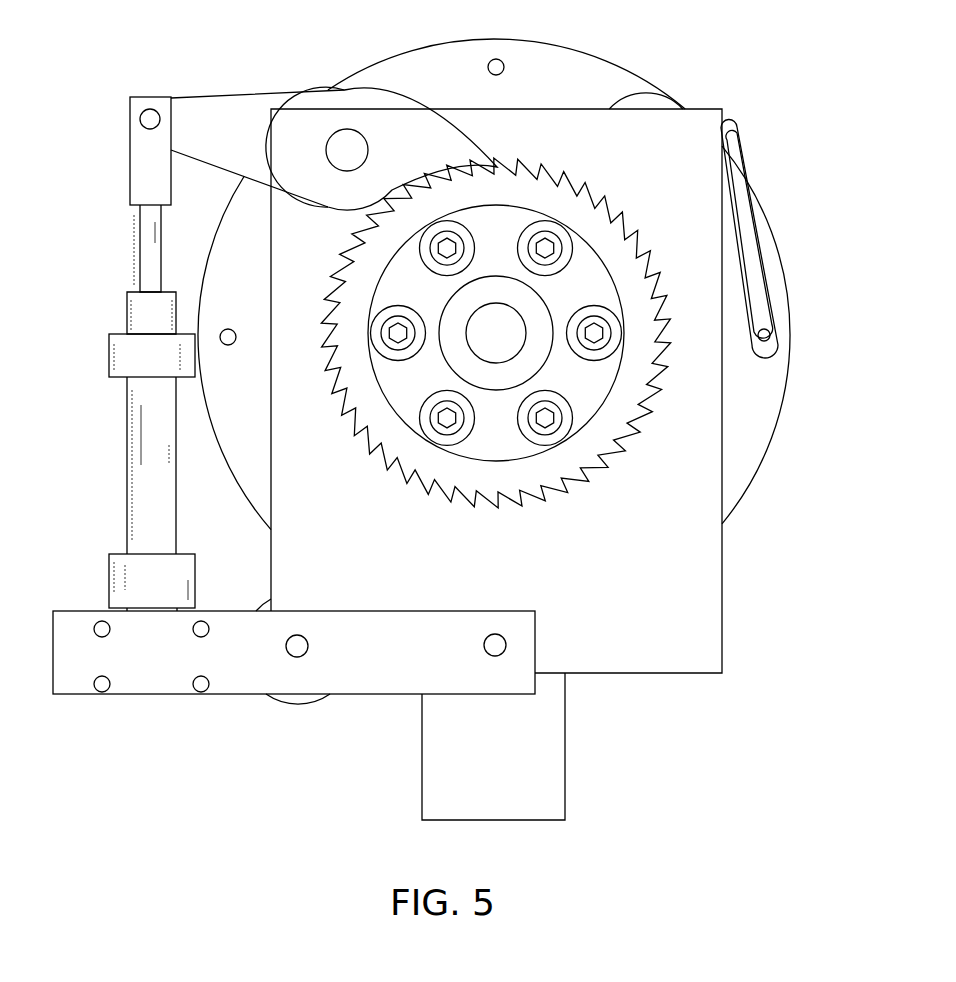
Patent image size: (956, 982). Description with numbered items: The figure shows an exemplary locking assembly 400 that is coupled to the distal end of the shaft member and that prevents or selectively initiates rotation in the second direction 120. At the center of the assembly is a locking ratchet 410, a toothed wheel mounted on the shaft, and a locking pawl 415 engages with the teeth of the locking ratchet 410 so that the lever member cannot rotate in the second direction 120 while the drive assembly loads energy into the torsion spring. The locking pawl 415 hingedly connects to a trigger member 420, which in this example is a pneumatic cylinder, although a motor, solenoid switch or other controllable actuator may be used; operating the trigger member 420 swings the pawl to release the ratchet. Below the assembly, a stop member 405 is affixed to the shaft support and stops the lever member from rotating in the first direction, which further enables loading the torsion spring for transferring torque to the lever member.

The locking assembly 400 is at (231, 76).
The locking pawl 415 is at (417, 154).
The locking ratchet 410 is at (632, 387).
The second direction 120 is at (438, 305).
The trigger member 420 is at (147, 503).
The stop member 405 is at (300, 698).